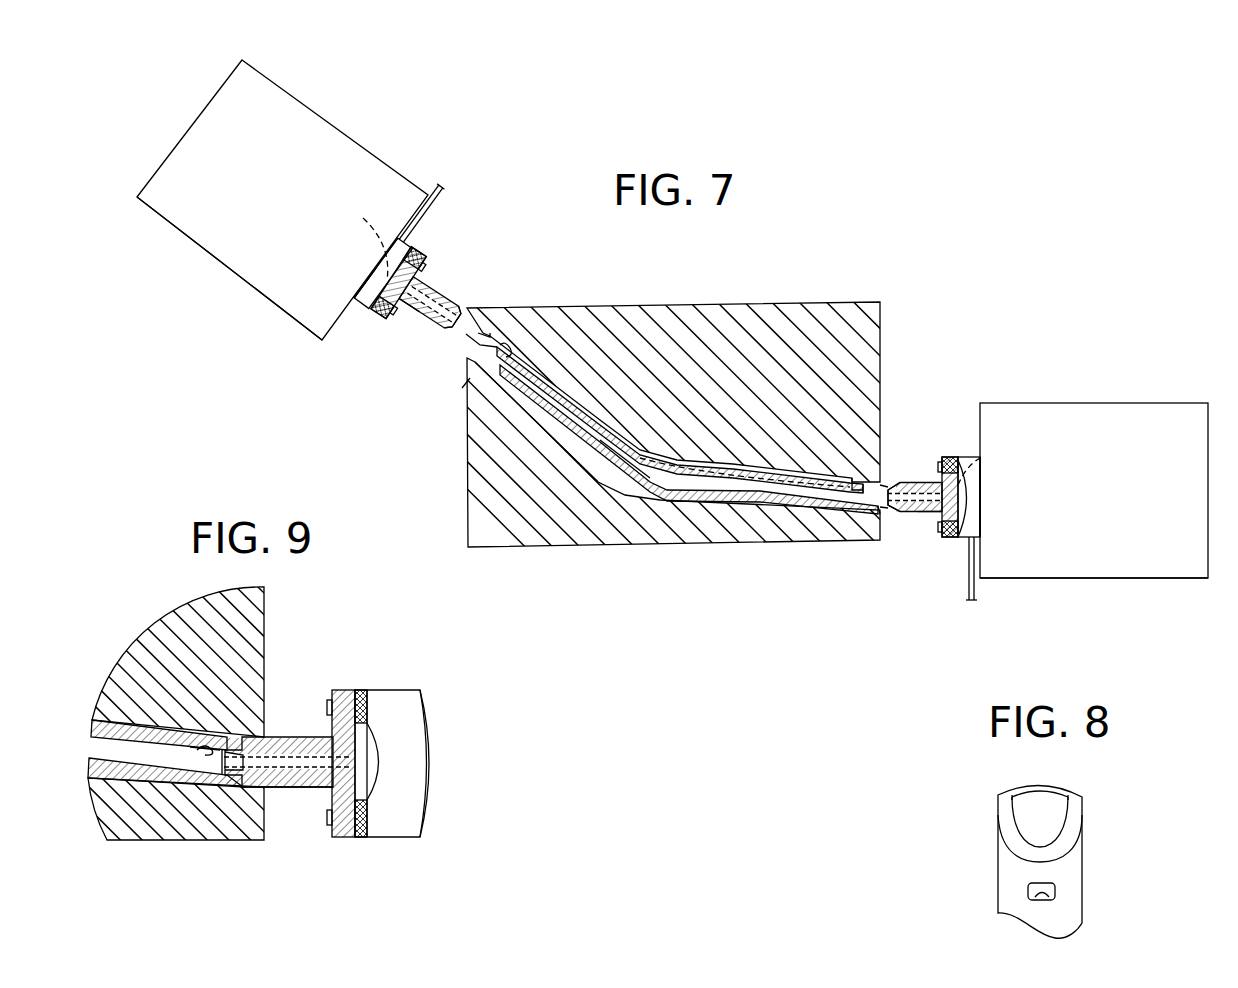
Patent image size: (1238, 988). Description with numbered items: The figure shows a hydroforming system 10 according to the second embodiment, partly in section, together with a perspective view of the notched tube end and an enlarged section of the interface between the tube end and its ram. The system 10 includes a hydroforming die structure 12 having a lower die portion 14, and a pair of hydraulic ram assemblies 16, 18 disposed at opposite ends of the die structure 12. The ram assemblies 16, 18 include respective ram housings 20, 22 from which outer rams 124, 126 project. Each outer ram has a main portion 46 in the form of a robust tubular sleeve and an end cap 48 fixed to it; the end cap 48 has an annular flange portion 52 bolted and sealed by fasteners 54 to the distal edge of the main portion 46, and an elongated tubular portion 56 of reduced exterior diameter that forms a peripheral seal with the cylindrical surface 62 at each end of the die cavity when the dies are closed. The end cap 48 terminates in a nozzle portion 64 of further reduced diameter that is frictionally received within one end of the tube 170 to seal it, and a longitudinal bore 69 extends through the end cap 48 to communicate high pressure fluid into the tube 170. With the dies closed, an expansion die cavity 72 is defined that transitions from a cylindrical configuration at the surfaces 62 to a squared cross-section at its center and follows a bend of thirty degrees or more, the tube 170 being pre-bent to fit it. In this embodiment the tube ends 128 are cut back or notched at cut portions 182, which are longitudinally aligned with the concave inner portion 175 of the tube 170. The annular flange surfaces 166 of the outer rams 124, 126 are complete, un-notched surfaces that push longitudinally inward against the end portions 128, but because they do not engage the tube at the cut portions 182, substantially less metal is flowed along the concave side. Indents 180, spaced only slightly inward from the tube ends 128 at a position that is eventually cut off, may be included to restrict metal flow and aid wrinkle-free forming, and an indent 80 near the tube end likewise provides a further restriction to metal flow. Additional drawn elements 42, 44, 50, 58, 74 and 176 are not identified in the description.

In FIG. 7, the hydroforming system 10 is at (829, 243).
In FIG. 7, the hydroforming die structure 12 is at (819, 299).
In FIG. 7, the lower die portion 14 is at (611, 549).
In FIG. 9, the lower die portion 14 is at (158, 600).
In FIG. 7, the hydraulic ram assembly 16 is at (234, 275).
In FIG. 7, the hydraulic ram assembly 18 is at (1100, 590).
In FIG. 7, the ram housing 20 is at (259, 203).
In FIG. 7, the ram housing 22 is at (1086, 497).
In FIG. 7, the retaining pin 42 is at (441, 187).
In FIG. 7, the retaining pin 44 is at (975, 585).
In FIG. 7, the main portion 46 is at (419, 248).
In FIG. 9, the main portion 46 is at (385, 688).
In FIG. 7, the end cap 48 is at (423, 258).
In FIG. 9, the end cap 48 is at (340, 688).
In FIG. 7, the connector body 50 is at (373, 282).
In FIG. 7, the annular flange portion 52 is at (394, 308).
In FIG. 9, the annular flange portion 52 is at (330, 795).
In FIG. 7, the fasteners 54 is at (431, 272).
In FIG. 9, the fasteners 54 is at (328, 830).
In FIG. 7, the tubular portion 56 is at (405, 312).
In FIG. 9, the tubular portion 56 is at (277, 788).
In FIG. 7, the bore 58 is at (418, 318).
In FIG. 9, the bore 58 is at (285, 736).
In FIG. 7, the cylindrical surface 62 is at (500, 362).
In FIG. 7, the nozzle portion 64 is at (468, 306).
In FIG. 7, the longitudinal bore 69 is at (362, 218).
In FIG. 7, the expansion die cavity 72 is at (697, 468).
In FIG. 9, the lower hose 74 is at (112, 787).
In FIG. 7, the indent 80 is at (512, 350).
In FIG. 9, the indent 80 is at (264, 720).
In FIG. 7, the outer ram 124 is at (352, 309).
In FIG. 7, the outer ram 126 is at (972, 449).
In FIG. 9, the outer ram 126 is at (412, 685).
In FIG. 7, the tube ends 128 is at (478, 352).
In FIG. 8, the tube ends 128 is at (1073, 787).
In FIG. 9, the tube ends 128 is at (243, 790).
In FIG. 7, the annular flange surface 166 is at (457, 328).
In FIG. 9, the annular flange surface 166 is at (218, 790).
In FIG. 7, the tube 170 is at (622, 440).
In FIG. 8, the tube 170 is at (1015, 870).
In FIG. 9, the tube 170 is at (135, 730).
In FIG. 7, the concave inner portion 175 is at (723, 462).
In FIG. 7, the lower hose 176 is at (670, 495).
In FIG. 7, the indents 180 is at (860, 485).
In FIG. 8, the indents 180 is at (1057, 890).
In FIG. 7, the cut portions 182 is at (868, 500).
In FIG. 8, the cut portions 182 is at (1073, 820).
In FIG. 9, the cut portions 182 is at (200, 740).